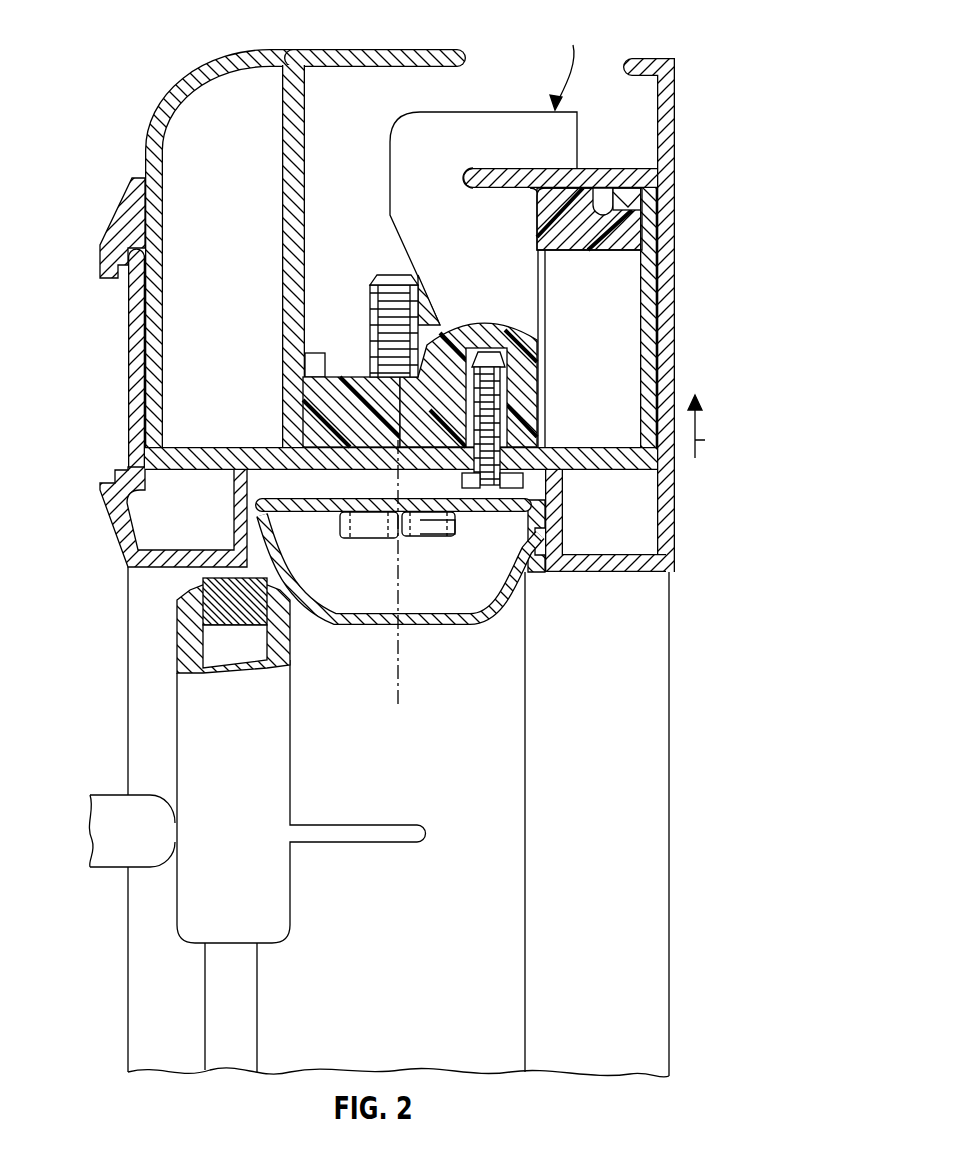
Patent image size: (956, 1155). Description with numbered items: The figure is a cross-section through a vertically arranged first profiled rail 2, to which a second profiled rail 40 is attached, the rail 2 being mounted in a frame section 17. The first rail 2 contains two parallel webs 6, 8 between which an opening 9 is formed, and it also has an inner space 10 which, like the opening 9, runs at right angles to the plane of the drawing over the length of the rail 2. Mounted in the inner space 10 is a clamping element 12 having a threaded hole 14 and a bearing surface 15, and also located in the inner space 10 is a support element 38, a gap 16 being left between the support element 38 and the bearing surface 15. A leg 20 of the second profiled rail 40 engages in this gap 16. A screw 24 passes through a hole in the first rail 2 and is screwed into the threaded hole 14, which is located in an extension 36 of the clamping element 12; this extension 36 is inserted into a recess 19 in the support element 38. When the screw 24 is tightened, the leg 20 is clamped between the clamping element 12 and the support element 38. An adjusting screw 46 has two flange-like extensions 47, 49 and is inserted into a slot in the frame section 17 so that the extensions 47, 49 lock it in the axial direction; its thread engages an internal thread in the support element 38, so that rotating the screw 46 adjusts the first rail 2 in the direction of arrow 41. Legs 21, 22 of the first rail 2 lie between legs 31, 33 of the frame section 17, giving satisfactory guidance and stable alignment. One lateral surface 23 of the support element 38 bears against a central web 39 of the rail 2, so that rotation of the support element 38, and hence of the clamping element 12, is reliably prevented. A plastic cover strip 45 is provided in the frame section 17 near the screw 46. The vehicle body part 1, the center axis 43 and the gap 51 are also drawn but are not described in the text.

The vehicle body part 1 is at (290, 908).
The first profiled rail 2 is at (208, 70).
The web 6 is at (426, 57).
The web 8 is at (640, 200).
The opening 9 is at (563, 61).
The inner space 10 is at (361, 150).
The clamping element 12 is at (445, 145).
The threaded hole 14 is at (535, 440).
The bearing surface 15 is at (463, 180).
The gap 16 is at (578, 188).
The frame section 17 is at (622, 571).
The recess 19 is at (543, 340).
The leg 20 is at (665, 182).
The leg 21 is at (155, 212).
The leg 22 is at (652, 253).
The lateral surface 23 is at (298, 410).
The screw 24 is at (498, 398).
The leg 31 is at (140, 322).
The leg 33 is at (671, 320).
The extension 36 is at (443, 245).
The support element 38 is at (352, 400).
The central web 39 is at (290, 290).
The second profiled rail 40 is at (677, 125).
The arrow 41 is at (711, 426).
The center axis 43 is at (398, 700).
The plastic cover strip 45 is at (440, 628).
The adjusting screw 46 is at (447, 532).
The flange-like extension 47 is at (386, 503).
The flange-like extension 49 is at (358, 498).
The gap 51 is at (300, 425).